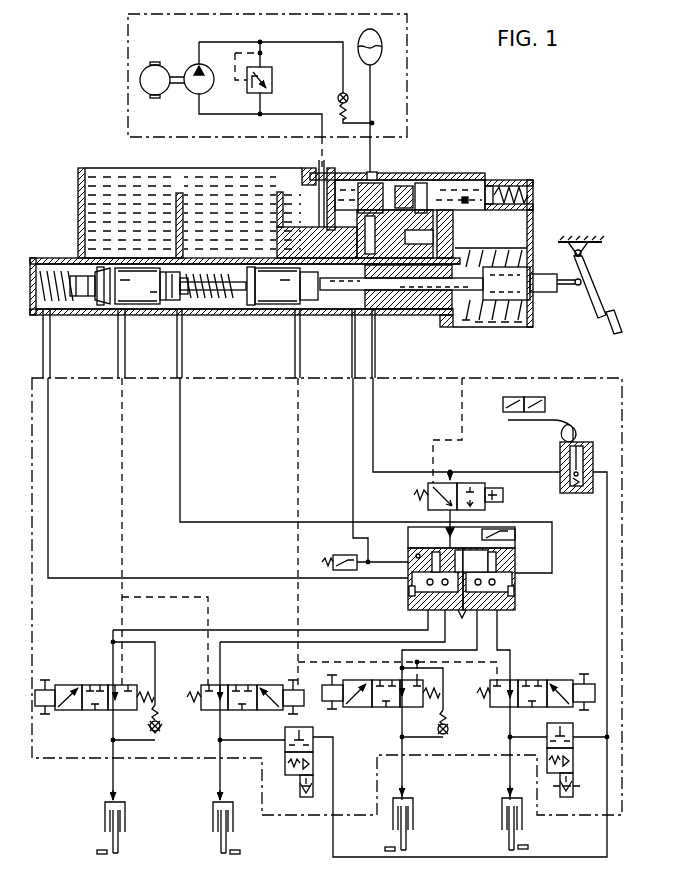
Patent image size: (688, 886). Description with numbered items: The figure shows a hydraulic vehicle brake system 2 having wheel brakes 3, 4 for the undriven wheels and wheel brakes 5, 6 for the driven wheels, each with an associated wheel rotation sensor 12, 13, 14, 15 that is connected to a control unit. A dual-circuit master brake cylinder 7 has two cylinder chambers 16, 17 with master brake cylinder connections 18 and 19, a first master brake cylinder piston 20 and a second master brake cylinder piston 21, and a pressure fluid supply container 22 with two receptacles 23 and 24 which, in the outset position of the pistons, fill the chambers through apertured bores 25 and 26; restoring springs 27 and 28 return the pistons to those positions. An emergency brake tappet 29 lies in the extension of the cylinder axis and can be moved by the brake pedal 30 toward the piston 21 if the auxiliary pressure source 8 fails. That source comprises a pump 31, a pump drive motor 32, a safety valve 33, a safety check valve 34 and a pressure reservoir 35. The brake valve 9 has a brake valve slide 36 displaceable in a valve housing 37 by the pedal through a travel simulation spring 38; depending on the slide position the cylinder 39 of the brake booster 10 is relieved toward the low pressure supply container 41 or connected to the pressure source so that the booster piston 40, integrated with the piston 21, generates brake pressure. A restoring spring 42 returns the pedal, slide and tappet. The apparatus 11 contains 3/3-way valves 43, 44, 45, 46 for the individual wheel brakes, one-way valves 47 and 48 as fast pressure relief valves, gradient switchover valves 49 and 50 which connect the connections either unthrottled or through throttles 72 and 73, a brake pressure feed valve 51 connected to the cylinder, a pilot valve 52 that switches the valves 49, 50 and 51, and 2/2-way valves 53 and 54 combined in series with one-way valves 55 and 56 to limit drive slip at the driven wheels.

The vehicle brake system 2 is at (89, 146).
The wheel brake 3 is at (105, 806).
The wheel brake 4 is at (413, 804).
The wheel brake 5 is at (213, 806).
The wheel brake 6 is at (502, 804).
The dual-circuit master brake cylinder 7 is at (72, 266).
The auxiliary pressure source 8 is at (284, 92).
The brake valve 9 is at (407, 216).
The brake booster 10 is at (512, 235).
The apparatus for preventing wheel locking and limiting drive slip 11 is at (552, 378).
The wheel rotation sensor 12 is at (97, 851).
The wheel rotation sensor 13 is at (385, 848).
The wheel rotation sensor 14 is at (240, 851).
The wheel rotation sensor 15 is at (528, 846).
The cylinder chamber 16 is at (52, 266).
The cylinder chamber 17 is at (220, 304).
The master brake cylinder connection 18 is at (44, 310).
The master brake cylinder connection 19 is at (176, 304).
The first master brake cylinder piston 20 is at (128, 290).
The second master brake cylinder piston 21 is at (270, 306).
The pressure fluid supply container 22 is at (78, 192).
The receptacle 23 is at (146, 212).
The receptacle 24 is at (212, 214).
The apertured bore 25 is at (100, 266).
The apertured bore 26 is at (250, 266).
The restoring spring 27 is at (72, 304).
The restoring spring 28 is at (186, 304).
The emergency brake tappet 29 is at (410, 291).
The brake pedal 30 is at (611, 308).
The pump 31 is at (207, 90).
The pump drive motor 32 is at (160, 95).
The safety valve 33 is at (272, 75).
The safety check valve 34 is at (338, 98).
The pressure reservoir 35 is at (374, 66).
The brake valve slide 36 is at (405, 180).
The valve housing 37 is at (455, 180).
The travel simulation spring 38 is at (500, 182).
The cylinder 39 is at (298, 315).
The booster piston 40 is at (354, 315).
The low pressure supply container 41 is at (302, 212).
The restoring spring 42 is at (494, 322).
The 3/3-way valve 43 is at (64, 686).
The 3/3-way valve 44 is at (386, 708).
The 3/3-way valve 45 is at (232, 686).
The 3/3-way valve 46 is at (522, 680).
The one-way valve 47 is at (160, 729).
The one-way valve 48 is at (448, 729).
The brake pressure gradient switchover valve 49 is at (404, 600).
The brake pressure gradient switchover valve 50 is at (519, 598).
The brake pressure feed valve 51 is at (408, 548).
The pilot valve 52 is at (428, 496).
The valve 53 is at (313, 735).
The valve 54 is at (573, 734).
The one-way valve 55 is at (301, 786).
The one-way valve 56 is at (573, 763).
The throttle 72 is at (409, 592).
The throttle 73 is at (460, 612).